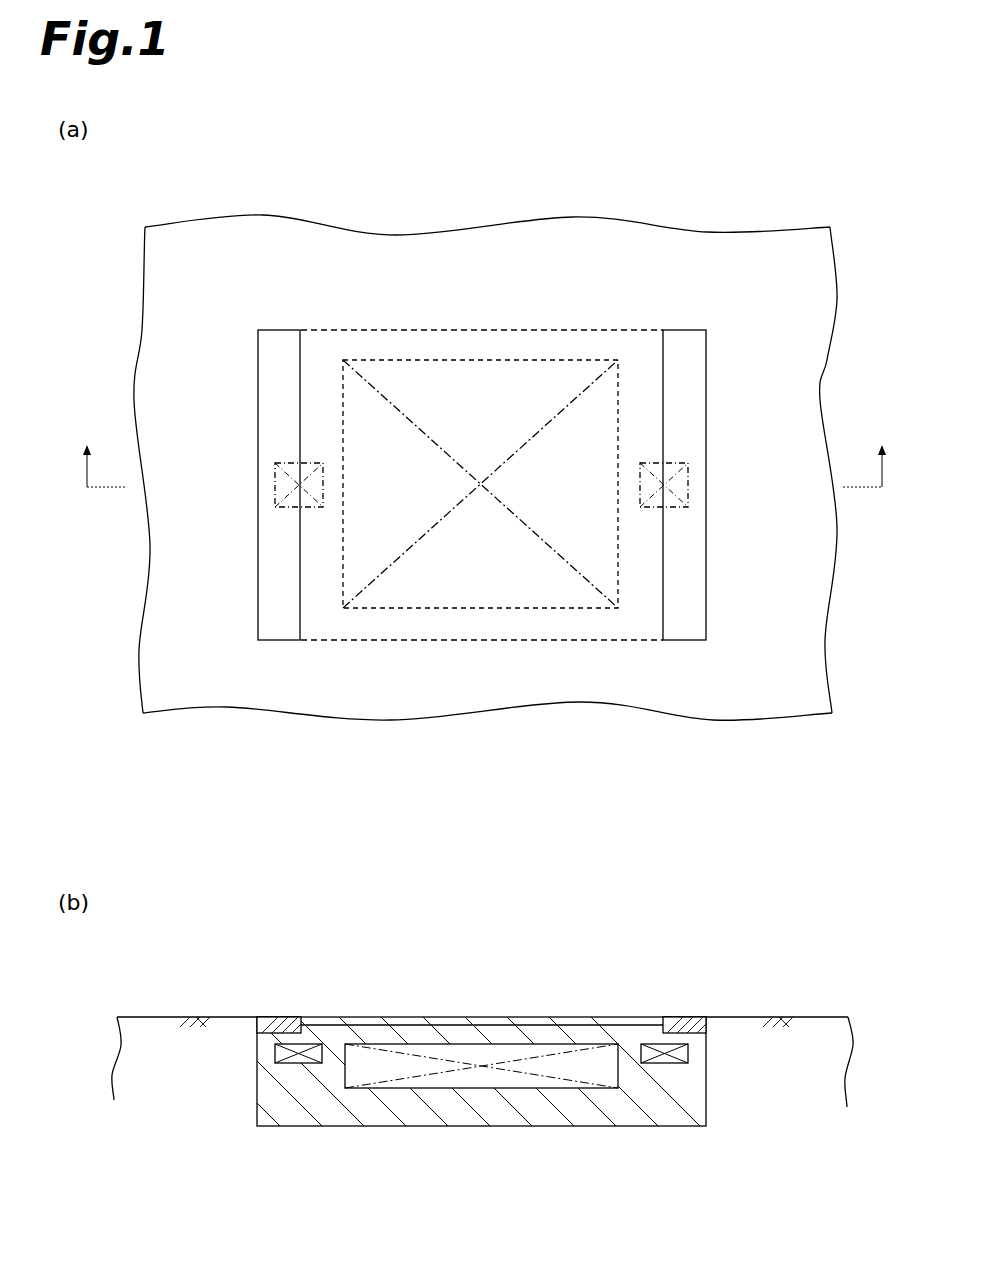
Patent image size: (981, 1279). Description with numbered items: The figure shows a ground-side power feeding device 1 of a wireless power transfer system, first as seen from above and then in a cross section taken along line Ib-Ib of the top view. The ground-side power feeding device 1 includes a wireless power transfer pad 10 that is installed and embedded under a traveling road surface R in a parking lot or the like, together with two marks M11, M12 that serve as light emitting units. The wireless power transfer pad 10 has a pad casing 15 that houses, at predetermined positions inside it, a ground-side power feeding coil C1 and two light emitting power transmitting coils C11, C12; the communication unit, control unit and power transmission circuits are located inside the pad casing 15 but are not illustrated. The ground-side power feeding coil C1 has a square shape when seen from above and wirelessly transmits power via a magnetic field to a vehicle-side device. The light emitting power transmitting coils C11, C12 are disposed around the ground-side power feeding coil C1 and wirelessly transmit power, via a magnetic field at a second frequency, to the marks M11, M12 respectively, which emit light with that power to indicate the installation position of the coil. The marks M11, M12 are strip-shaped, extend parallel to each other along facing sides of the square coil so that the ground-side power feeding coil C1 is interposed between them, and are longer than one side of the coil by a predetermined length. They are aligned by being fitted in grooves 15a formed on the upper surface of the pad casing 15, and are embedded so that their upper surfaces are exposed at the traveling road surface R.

The ground-side power feeding device 1 is at (581, 268).
The wireless power transfer pad 10 is at (343, 330).
The pad casing 15 is at (680, 1127).
The groove 15a is at (264, 1018).
The ground-side power feeding coil C1 is at (445, 360).
The light emitting power transmitting coil C11 is at (275, 493).
The light emitting power transmitting coil C12 is at (688, 490).
The mark (light emitting unit) M11 is at (273, 330).
The mark (light emitting unit) M12 is at (680, 330).
The traveling road surface R is at (771, 247).
The line Ib- Ib is at (484, 453).